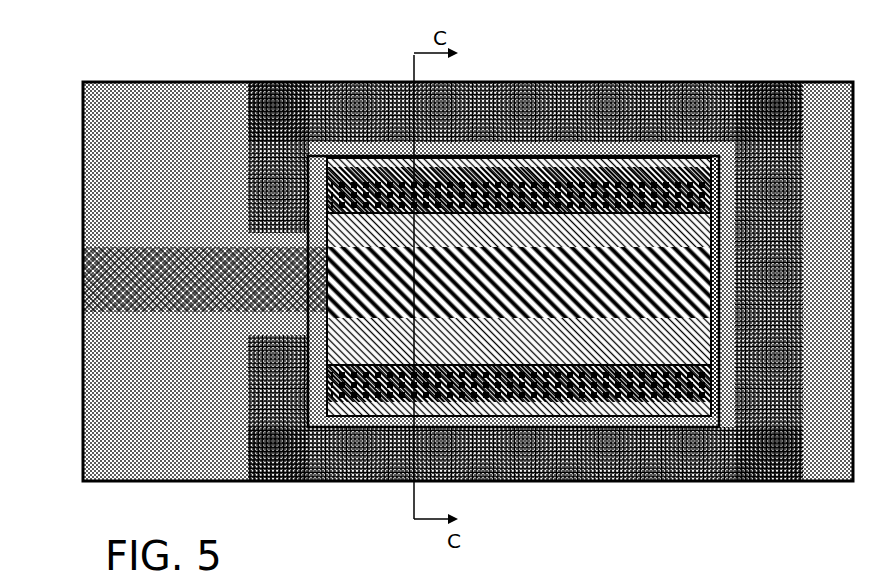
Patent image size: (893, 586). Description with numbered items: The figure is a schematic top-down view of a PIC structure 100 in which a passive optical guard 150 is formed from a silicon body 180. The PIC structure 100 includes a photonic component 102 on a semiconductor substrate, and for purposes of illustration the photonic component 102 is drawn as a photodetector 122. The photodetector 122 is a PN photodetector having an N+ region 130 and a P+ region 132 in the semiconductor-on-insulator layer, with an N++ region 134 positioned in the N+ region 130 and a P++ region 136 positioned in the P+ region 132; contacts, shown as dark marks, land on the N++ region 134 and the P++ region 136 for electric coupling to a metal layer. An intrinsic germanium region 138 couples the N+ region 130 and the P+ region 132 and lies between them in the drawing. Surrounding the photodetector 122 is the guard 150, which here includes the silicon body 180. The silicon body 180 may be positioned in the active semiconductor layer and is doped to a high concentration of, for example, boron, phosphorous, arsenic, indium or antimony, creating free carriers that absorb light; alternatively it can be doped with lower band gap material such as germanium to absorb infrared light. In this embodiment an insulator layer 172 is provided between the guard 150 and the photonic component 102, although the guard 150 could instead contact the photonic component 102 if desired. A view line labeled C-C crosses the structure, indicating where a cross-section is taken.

The PIC structure 100 is at (116, 72).
The photonic component 102 is at (207, 167).
The photodetector 122 is at (205, 279).
The N+ region 130 is at (535, 275).
The P+ region 132 is at (386, 333).
The N++ region 134 is at (474, 172).
The P++ region 136 is at (498, 390).
The germanium region 138 is at (575, 272).
The passive optical guard 150 is at (525, 280).
The insulator layer 172 is at (723, 388).
The silicon body 180 is at (553, 122).